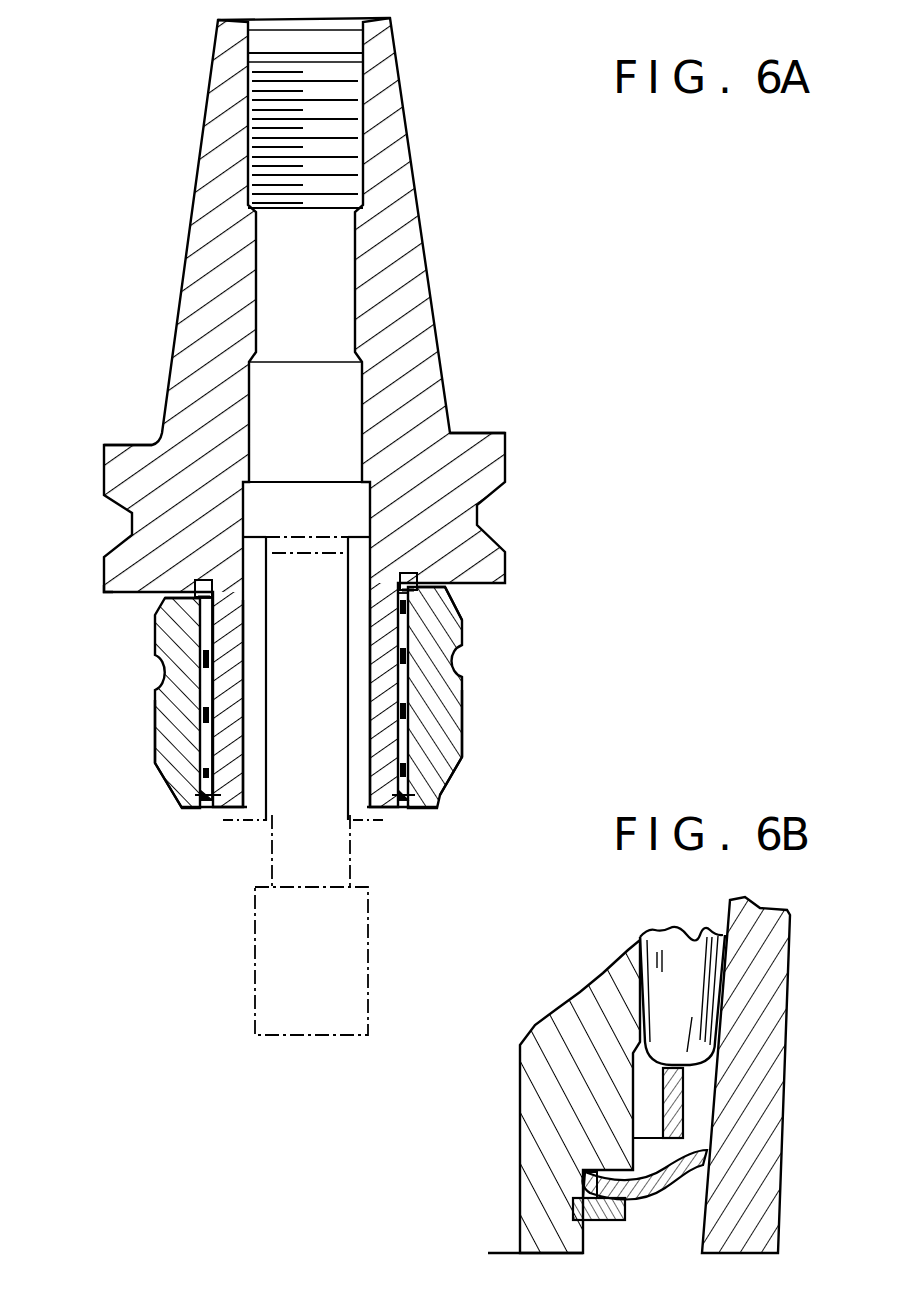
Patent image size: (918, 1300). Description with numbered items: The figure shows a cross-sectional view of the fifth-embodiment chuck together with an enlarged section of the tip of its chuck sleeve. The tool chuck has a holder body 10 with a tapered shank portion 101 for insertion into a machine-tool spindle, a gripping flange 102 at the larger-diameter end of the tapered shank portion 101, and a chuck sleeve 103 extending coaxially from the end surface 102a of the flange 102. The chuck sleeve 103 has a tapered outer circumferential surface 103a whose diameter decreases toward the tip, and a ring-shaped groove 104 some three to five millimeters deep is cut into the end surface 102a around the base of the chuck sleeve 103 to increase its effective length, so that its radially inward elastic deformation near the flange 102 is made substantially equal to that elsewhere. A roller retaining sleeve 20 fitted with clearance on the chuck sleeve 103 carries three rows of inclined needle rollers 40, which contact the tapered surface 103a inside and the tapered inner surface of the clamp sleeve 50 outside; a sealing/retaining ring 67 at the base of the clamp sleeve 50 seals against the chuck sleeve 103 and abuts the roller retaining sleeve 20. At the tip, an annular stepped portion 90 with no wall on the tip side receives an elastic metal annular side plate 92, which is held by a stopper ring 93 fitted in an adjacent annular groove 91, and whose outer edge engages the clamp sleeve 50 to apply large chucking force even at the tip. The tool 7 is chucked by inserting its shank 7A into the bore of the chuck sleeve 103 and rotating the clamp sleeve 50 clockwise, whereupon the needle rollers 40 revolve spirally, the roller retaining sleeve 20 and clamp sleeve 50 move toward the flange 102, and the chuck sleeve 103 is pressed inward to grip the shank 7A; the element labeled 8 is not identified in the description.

In FIG. 6A, the holder body 10 is at (318, 419).
In FIG. 6A, the tapered shank portion 101 is at (417, 315).
In FIG. 6A, the gripping flange 102 is at (485, 453).
In FIG. 6A, the end surface 102a is at (112, 598).
In FIG. 6A, the chuck sleeve 103 is at (237, 622).
In FIG. 6B, the chuck sleeve 103 is at (533, 1053).
In FIG. 6A, the tapered outer circumferential surface 103a is at (398, 683).
In FIG. 6A, the ring-shaped groove 104 is at (412, 576).
In FIG. 6A, the roller retaining sleeve 20 is at (420, 660).
In FIG. 6B, the roller retaining sleeve 20 is at (684, 1086).
In FIG. 6A, the needle rollers 40 is at (445, 640).
In FIG. 6B, the needle rollers 40 is at (702, 998).
In FIG. 6A, the clamp sleeve 50 is at (443, 733).
In FIG. 6B, the clamp sleeve 50 is at (770, 938).
In FIG. 6A, the sealing/retaining ring 67 is at (440, 613).
In FIG. 6A, the tool 7 is at (262, 952).
In FIG. 6A, the shank 7A is at (267, 858).
In FIG. 6A, the end face 8 is at (243, 822).
In FIG. 6B, the annular stepped portion 90 is at (587, 1172).
In FIG. 6B, the annular groove 91 is at (583, 1192).
In FIG. 6A, the annular side plate 92 is at (386, 808).
In FIG. 6B, the annular side plate 92 is at (712, 1153).
In FIG. 6A, the stopper ring 93 is at (390, 812).
In FIG. 6B, the stopper ring 93 is at (573, 1207).